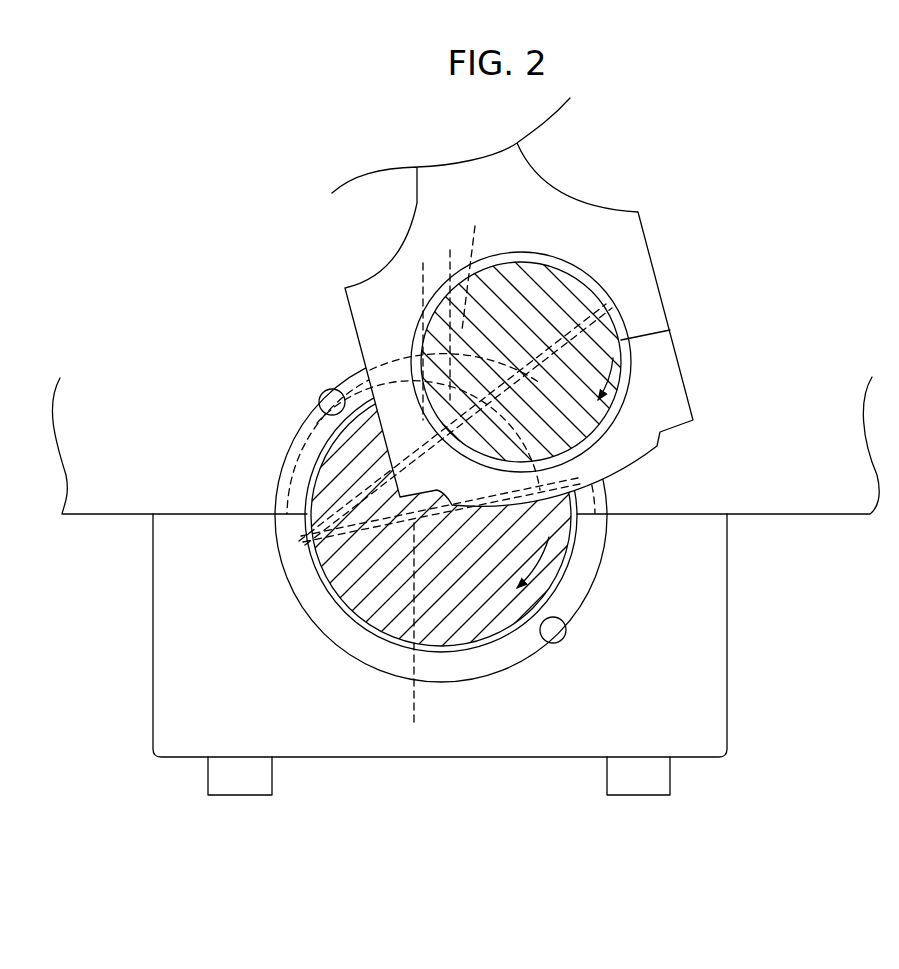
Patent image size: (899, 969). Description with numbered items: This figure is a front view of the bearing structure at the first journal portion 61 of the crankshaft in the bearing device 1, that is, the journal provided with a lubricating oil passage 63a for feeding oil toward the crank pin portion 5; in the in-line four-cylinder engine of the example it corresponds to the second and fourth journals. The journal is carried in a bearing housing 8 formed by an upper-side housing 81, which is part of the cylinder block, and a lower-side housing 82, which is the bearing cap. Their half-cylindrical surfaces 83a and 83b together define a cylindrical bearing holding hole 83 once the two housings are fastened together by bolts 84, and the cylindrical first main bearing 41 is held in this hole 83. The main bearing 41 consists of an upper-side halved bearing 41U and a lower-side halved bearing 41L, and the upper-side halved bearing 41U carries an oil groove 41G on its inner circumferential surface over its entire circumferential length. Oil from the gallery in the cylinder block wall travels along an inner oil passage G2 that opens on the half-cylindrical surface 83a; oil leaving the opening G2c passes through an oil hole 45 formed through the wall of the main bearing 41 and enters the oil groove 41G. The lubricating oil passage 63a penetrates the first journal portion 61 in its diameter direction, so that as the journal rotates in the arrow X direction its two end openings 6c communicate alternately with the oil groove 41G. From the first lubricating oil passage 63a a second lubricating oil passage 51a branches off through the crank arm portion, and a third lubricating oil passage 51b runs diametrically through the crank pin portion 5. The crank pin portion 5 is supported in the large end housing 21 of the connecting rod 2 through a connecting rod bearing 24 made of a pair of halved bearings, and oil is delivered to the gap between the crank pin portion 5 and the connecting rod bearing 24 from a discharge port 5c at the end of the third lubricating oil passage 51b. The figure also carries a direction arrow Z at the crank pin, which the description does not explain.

The bearing device 1 is at (150, 220).
The connecting rod 2 is at (417, 202).
The large end housing 21 is at (684, 242).
The connecting rod bearing 24 is at (639, 385).
The crank pin portion 5 is at (540, 288).
The discharge port 5c is at (614, 307).
The second lubricating oil passage 51a is at (345, 440).
The third lubricating oil passage 51b is at (563, 287).
The end openings 6c is at (300, 544).
The bearing housing 8 is at (465, 615).
The upper-side housing 81 is at (782, 503).
The lower-side housing 82 is at (727, 688).
The bearing holding hole 83 is at (431, 508).
The half-cylindrical surface 83a is at (317, 406).
The half-cylindrical surface 83b is at (548, 623).
The bolts 84 is at (237, 783).
The first main bearing 41 is at (270, 542).
The upper-side halved bearing 41U is at (288, 455).
The lower-side halved bearing 41L is at (290, 576).
The oil groove 41G is at (290, 492).
The oil hole 45 is at (392, 352).
The first journal portion 61 is at (362, 607).
The lubricating oil passage 63a is at (419, 636).
The inner oil passage G2 is at (423, 263).
The opening G2c is at (484, 265).
The arrow X direction X is at (545, 557).
The rotation direction Z is at (624, 355).